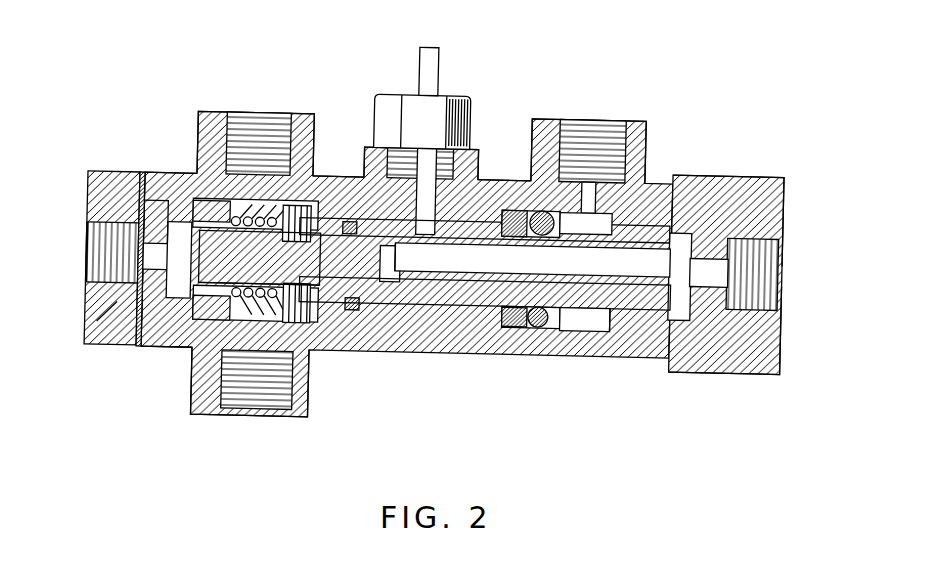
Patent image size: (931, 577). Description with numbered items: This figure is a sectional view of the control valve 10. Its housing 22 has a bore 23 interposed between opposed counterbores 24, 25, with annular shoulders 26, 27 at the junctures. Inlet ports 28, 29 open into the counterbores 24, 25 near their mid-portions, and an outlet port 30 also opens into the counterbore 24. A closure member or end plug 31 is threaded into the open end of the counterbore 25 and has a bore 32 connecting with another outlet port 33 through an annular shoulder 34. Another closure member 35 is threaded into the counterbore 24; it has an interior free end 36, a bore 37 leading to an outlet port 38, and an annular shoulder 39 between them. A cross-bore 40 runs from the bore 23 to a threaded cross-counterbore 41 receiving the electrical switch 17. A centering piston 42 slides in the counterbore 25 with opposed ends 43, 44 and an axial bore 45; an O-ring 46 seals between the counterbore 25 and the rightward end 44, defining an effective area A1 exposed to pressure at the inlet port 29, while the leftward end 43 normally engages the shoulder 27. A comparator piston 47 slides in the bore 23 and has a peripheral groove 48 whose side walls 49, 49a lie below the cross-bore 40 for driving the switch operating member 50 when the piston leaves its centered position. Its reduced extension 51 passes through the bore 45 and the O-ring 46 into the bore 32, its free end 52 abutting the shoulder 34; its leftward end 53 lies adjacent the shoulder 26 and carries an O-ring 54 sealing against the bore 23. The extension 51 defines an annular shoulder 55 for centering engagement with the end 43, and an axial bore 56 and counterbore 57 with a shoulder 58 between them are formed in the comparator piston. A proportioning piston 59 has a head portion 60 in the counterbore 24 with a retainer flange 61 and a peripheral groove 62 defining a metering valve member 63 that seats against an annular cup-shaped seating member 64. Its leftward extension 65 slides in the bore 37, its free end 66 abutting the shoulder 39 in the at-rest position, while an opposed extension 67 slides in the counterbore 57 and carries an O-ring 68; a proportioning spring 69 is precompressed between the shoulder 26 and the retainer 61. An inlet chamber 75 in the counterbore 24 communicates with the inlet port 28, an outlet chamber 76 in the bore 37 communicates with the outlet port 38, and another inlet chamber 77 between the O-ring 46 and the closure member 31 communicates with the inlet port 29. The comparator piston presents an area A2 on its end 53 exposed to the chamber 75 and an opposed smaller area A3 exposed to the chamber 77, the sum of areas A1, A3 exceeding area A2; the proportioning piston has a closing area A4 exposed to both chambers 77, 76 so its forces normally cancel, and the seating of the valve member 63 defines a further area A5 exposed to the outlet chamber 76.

The control valve 10 is at (692, 94).
The electrical switch 17 is at (455, 97).
The housing 22 is at (640, 155).
The bore 23 is at (440, 300).
The counterbore 24 is at (290, 338).
The counterbore 25 is at (600, 327).
The annular shoulder 26 is at (320, 196).
The annular shoulder 27 is at (530, 214).
The inlet port 28 is at (245, 112).
The inlet port 29 is at (603, 120).
The outlet port 30 is at (268, 418).
The closure member 31 is at (780, 186).
The bore 32 is at (727, 220).
The outlet port 33 is at (778, 300).
The annular shoulder 34 is at (702, 305).
The closure member 35 is at (108, 188).
The interior free end 36 is at (190, 332).
The bore 37 is at (147, 342).
The outlet port 38 is at (90, 280).
The annular shoulder 39 is at (170, 232).
The cross-bore 40 is at (432, 202).
The cross-counterbore 41 is at (468, 153).
The centering piston 42 is at (508, 333).
The leftward end 43 is at (446, 234).
The rightward end 44 is at (512, 250).
The bore 45 is at (542, 240).
The O-ring 46 is at (548, 330).
The comparator piston 47 is at (467, 448).
The peripheral groove means 48 is at (478, 333).
The camming surface 49 is at (405, 298).
The camming surface 49a is at (430, 262).
The switch operating member 50 is at (420, 183).
The reduced extension 51 is at (603, 297).
The free end 52 is at (660, 300).
The leftward end 53 is at (338, 229).
The O-ring 54 is at (338, 357).
The annular shoulder 55 is at (440, 313).
The axial bore 56 is at (638, 262).
The counterbore 57 is at (396, 305).
The annular shoulder 58 is at (442, 242).
The proportioning piston 59 is at (238, 316).
The head portion 60 is at (273, 286).
The retainer portion 61 is at (202, 200).
The peripheral groove means 62 is at (216, 253).
The valve member 63 is at (175, 220).
The seating member 64 is at (199, 188).
The extension means 65 is at (126, 306).
The free end portion 66 is at (112, 252).
The extension means 67 is at (334, 305).
The O-ring 68 is at (365, 222).
The proportioning spring 69 is at (272, 208).
The inlet chamber 75 is at (258, 200).
The outlet chamber 76 is at (188, 212).
The inlet chamber 77 is at (692, 238).
The annular effective area A1 is at (528, 183).
The annular effective area A2 is at (327, 190).
The annular effective area A3 is at (625, 279).
The closing area A4 is at (384, 203).
The area A5 is at (525, 326).